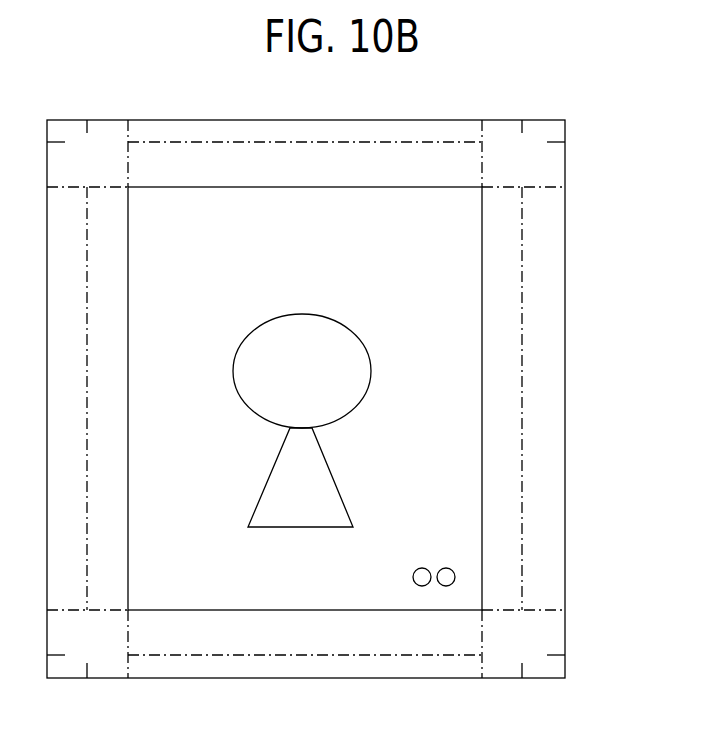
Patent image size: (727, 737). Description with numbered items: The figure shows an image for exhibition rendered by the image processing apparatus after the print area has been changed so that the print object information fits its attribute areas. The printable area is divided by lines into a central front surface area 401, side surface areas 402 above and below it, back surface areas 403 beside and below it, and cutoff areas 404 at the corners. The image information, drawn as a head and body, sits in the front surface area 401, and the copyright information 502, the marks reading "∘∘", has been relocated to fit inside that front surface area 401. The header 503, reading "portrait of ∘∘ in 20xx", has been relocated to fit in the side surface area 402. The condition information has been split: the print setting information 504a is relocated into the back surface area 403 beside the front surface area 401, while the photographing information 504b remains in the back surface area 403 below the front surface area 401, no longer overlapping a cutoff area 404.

The front surface area 401 is at (445, 210).
The side surface area 402 is at (383, 155).
The back surface area 403 is at (198, 128).
The cutoff area 404 is at (107, 128).
The copyright information 502 is at (435, 566).
The header 503 is at (262, 163).
The print setting information 504a is at (552, 541).
The photographing information 504b is at (458, 668).